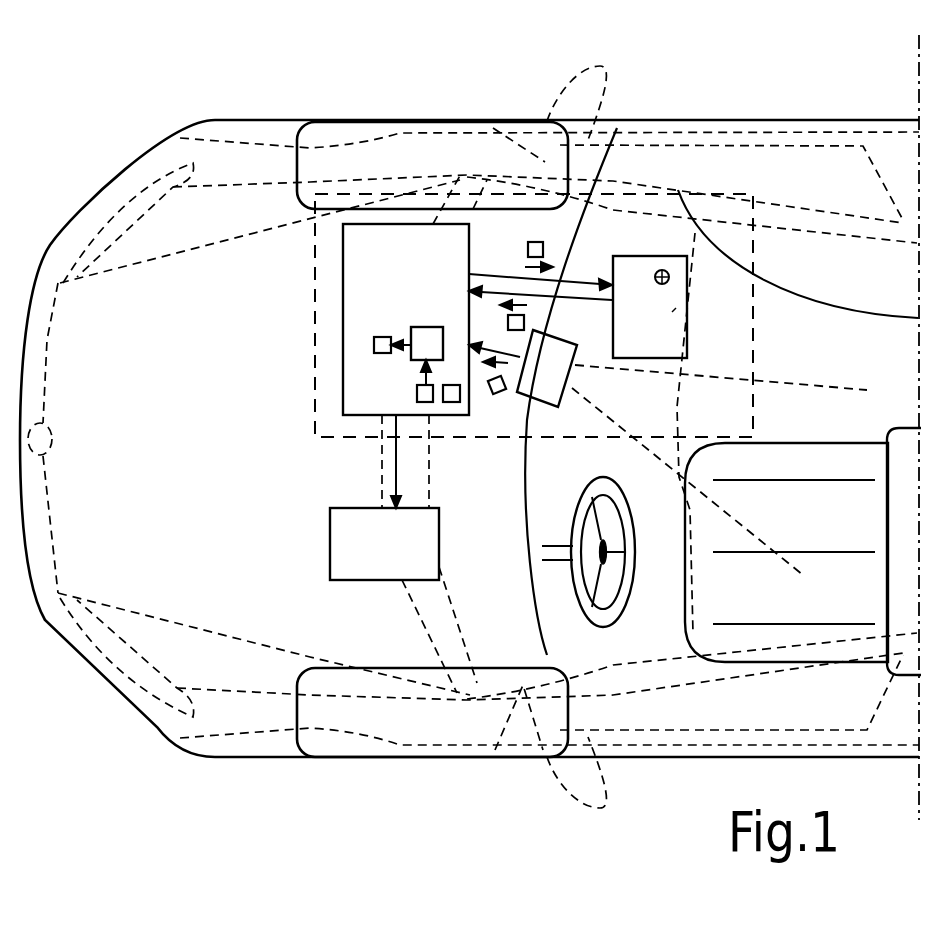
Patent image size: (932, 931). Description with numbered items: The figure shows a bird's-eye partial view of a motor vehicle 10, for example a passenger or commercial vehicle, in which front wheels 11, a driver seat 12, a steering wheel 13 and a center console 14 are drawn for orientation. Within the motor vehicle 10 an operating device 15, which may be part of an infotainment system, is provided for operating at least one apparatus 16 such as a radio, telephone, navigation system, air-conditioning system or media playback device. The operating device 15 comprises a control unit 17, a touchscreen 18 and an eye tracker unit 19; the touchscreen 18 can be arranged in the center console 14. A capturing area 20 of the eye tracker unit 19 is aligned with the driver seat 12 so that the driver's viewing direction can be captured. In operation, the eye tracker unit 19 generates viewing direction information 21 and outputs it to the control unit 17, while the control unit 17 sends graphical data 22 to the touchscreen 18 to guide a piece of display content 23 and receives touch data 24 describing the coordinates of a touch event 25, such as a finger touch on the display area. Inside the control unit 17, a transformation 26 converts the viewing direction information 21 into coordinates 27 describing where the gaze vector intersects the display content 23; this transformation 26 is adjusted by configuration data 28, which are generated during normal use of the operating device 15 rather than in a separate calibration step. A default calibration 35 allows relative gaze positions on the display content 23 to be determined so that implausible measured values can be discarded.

The motor vehicle 10 is at (280, 120).
The front wheels 11 is at (297, 193).
The driver seat 12 is at (830, 665).
The steering wheel 13 is at (583, 603).
The center console 14 is at (813, 308).
The operating device 15 is at (313, 318).
The apparatus 16 is at (330, 547).
The control unit 17 is at (342, 365).
The touchscreen 18 is at (633, 256).
The eye tracker unit 19 is at (517, 395).
The capturing area 20 is at (780, 380).
The viewing direction information 21 is at (497, 393).
The graphical data 22 is at (528, 247).
The display content 23 is at (672, 312).
The touch data 24 is at (524, 322).
The touch event 25 is at (662, 270).
The transformation 26 is at (430, 327).
The coordinates 27 is at (382, 337).
The configuration data 28 is at (417, 393).
The default calibration 35 is at (450, 403).